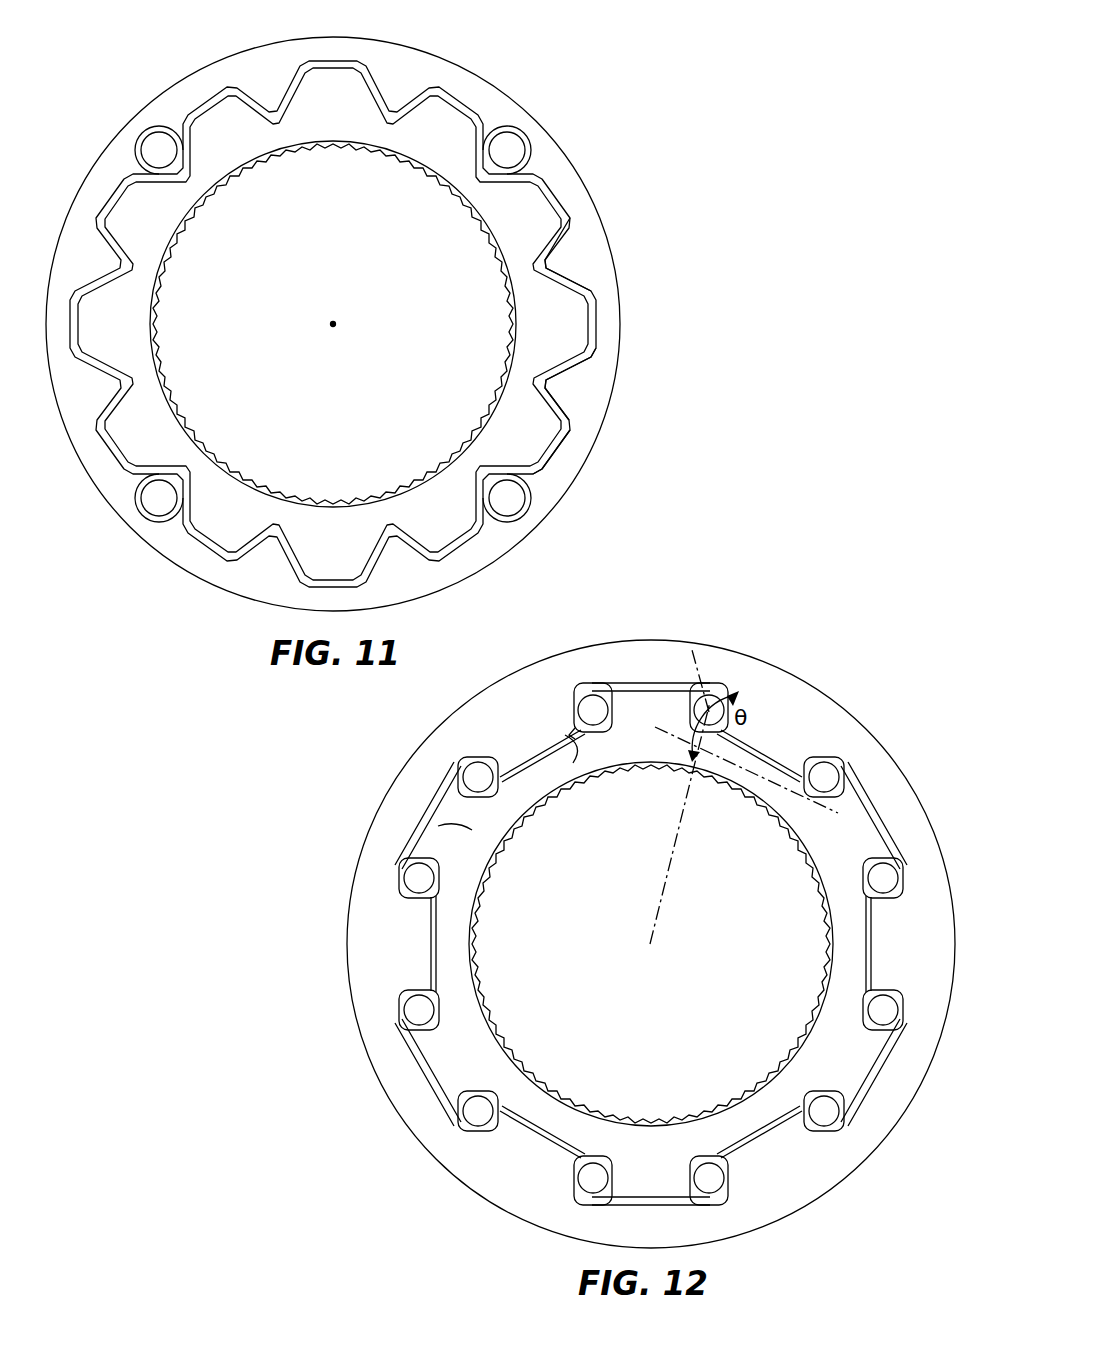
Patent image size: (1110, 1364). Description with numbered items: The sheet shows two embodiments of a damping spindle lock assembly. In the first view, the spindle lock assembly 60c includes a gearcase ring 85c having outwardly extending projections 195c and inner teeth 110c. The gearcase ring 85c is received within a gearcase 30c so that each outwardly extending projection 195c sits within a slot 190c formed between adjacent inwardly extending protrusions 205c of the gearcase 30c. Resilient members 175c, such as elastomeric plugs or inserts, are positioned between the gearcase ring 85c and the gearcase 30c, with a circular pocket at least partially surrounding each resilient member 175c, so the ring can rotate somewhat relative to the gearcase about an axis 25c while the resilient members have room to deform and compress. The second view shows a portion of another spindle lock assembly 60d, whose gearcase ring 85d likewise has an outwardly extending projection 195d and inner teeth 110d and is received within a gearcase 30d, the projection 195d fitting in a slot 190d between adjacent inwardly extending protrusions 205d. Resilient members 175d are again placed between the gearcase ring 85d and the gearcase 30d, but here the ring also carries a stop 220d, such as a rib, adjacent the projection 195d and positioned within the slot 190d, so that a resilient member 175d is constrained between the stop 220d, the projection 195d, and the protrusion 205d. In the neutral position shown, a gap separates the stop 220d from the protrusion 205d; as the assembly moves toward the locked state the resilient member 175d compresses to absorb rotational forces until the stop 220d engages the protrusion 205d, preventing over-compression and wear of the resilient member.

In FIG. 11, the axis 25c is at (333, 321).
In FIG. 11, the gearcase 30c is at (75, 232).
In FIG. 11, the damping spindle lock assembly 60c is at (86, 82).
In FIG. 11, the gearcase ring 85c is at (140, 434).
In FIG. 11, the inner teeth 110c is at (222, 444).
In FIG. 11, the resilient members 175c is at (160, 143).
In FIG. 11, the slot 190c is at (574, 456).
In FIG. 11, the outwardly extending projections 195c is at (532, 437).
In FIG. 11, the inwardly extending protrusions 205c is at (568, 262).
In FIG. 12, the gearcase 30d is at (897, 768).
In FIG. 12, the damping spindle lock assembly 60d is at (810, 628).
In FIG. 12, the gearcase ring 85d is at (775, 1128).
In FIG. 12, the inner teeth 110d is at (520, 1032).
In FIG. 12, the resilient members 175d is at (586, 676).
In FIG. 12, the slot 190d is at (655, 668).
In FIG. 12, the outwardly extending projection 195d is at (607, 758).
In FIG. 12, the inwardly extending protrusions 205d is at (552, 733).
In FIG. 12, the stop 220d is at (532, 757).